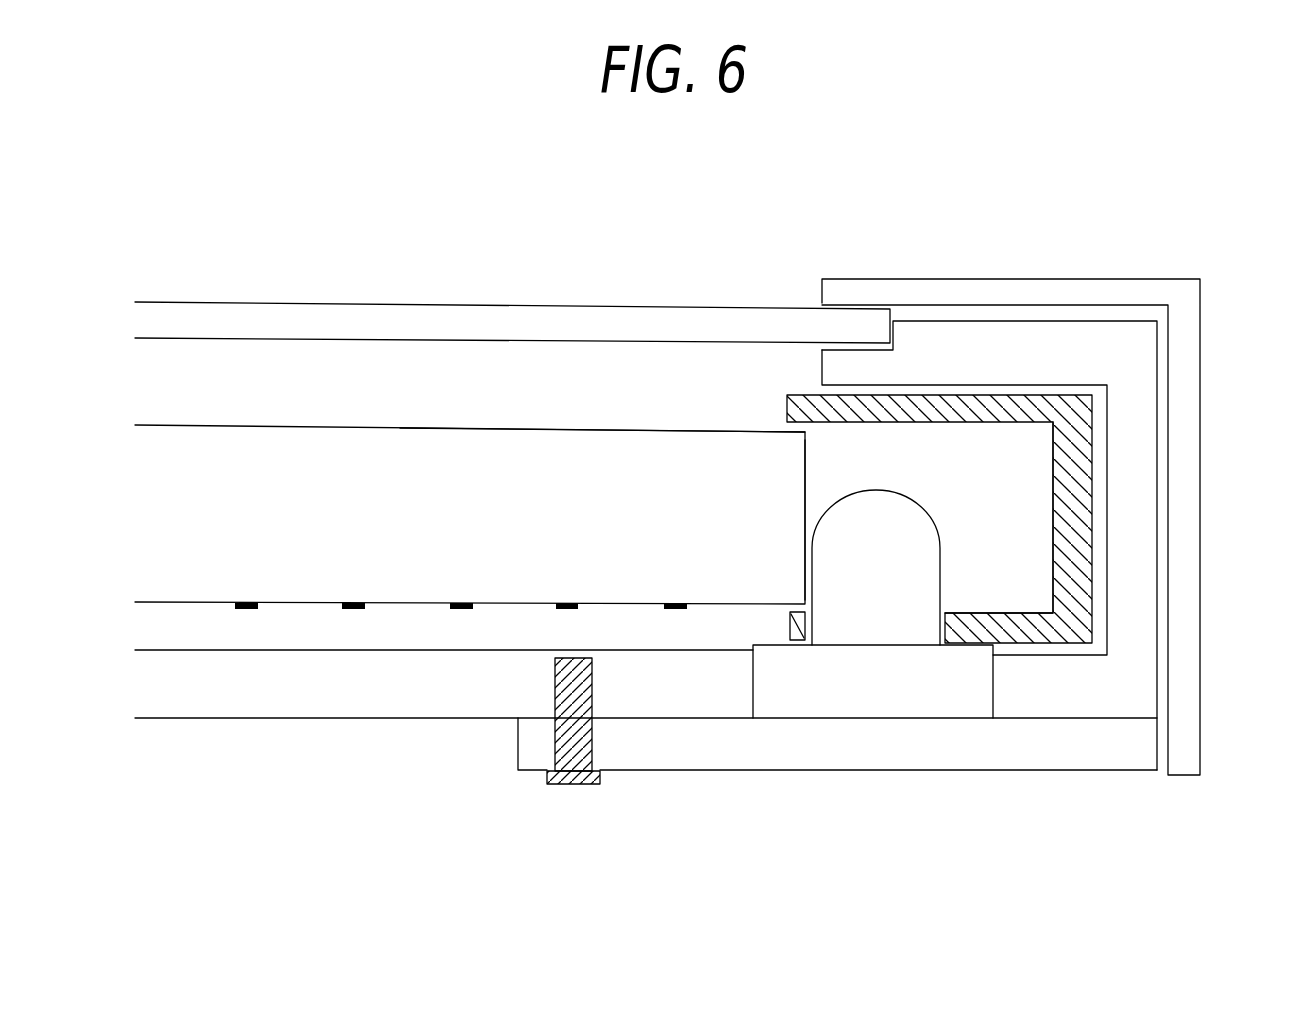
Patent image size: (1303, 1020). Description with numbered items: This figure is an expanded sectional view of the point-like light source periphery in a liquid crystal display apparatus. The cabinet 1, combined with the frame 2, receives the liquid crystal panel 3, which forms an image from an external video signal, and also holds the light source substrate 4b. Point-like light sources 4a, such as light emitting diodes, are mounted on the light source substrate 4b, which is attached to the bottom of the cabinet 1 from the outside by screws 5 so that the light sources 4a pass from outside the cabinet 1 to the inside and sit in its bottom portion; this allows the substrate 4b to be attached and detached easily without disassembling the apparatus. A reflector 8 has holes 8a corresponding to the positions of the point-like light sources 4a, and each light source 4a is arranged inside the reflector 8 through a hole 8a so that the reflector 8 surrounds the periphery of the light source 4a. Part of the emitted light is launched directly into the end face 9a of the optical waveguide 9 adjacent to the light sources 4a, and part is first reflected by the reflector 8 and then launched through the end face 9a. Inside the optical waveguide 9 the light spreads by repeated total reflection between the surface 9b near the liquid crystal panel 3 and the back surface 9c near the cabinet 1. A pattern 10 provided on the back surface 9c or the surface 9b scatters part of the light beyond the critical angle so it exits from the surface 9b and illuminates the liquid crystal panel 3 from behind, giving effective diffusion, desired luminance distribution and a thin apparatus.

The cabinet 1 is at (1132, 632).
The frame 2 is at (1185, 363).
The liquid crystal panel 3 is at (772, 322).
The point-like light source 4a is at (885, 537).
The light source substrate 4b is at (992, 760).
The screw 5 is at (593, 737).
The reflector 8 is at (1008, 407).
The hole 8a is at (940, 563).
The optical waveguide 9 is at (497, 512).
The end face 9a is at (805, 513).
The surface 9b is at (635, 430).
The back surface 9c is at (492, 603).
The pattern 10 is at (352, 608).